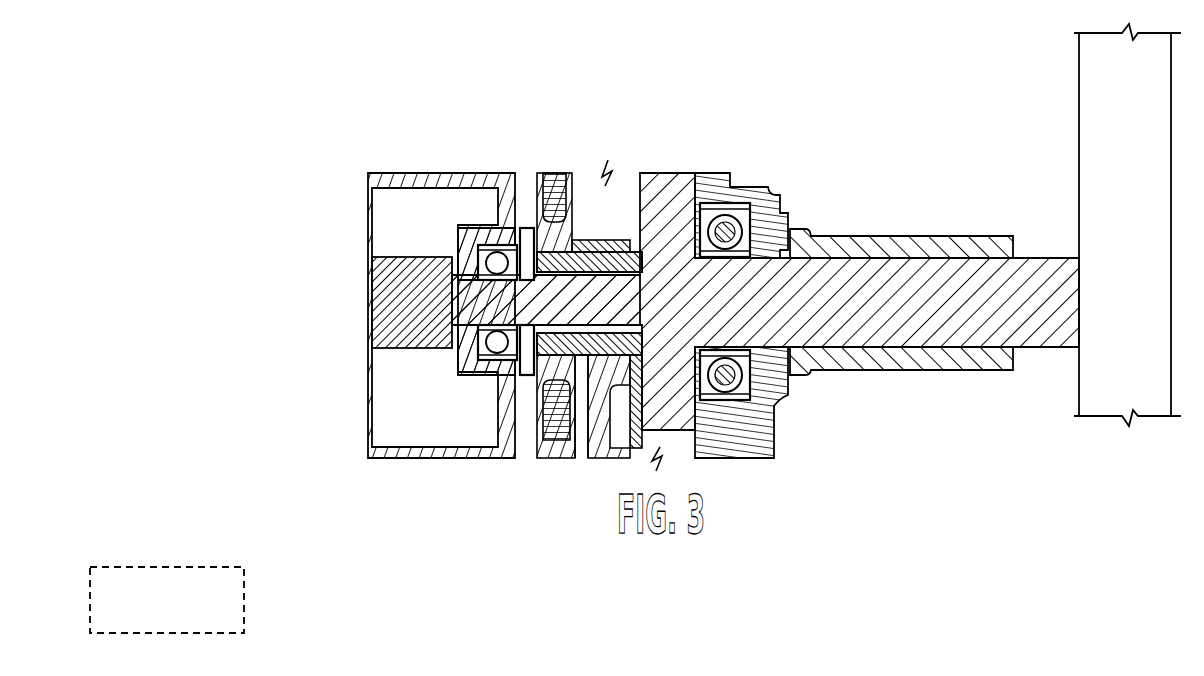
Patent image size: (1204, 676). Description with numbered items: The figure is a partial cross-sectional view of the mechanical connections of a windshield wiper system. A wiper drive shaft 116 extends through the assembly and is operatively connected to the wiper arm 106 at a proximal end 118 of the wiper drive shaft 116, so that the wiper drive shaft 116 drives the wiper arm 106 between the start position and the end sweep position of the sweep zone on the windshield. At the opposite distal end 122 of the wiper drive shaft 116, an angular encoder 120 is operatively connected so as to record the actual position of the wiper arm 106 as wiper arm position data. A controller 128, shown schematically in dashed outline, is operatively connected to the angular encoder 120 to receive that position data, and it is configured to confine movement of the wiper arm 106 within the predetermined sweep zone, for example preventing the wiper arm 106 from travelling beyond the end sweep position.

The wiper arm 106 is at (1093, 154).
The wiper drive shaft 116 is at (825, 268).
The proximal end 118 is at (1062, 364).
The angular encoder 120 is at (399, 258).
The distal end 122 is at (465, 298).
The controller 128 is at (385, 343).